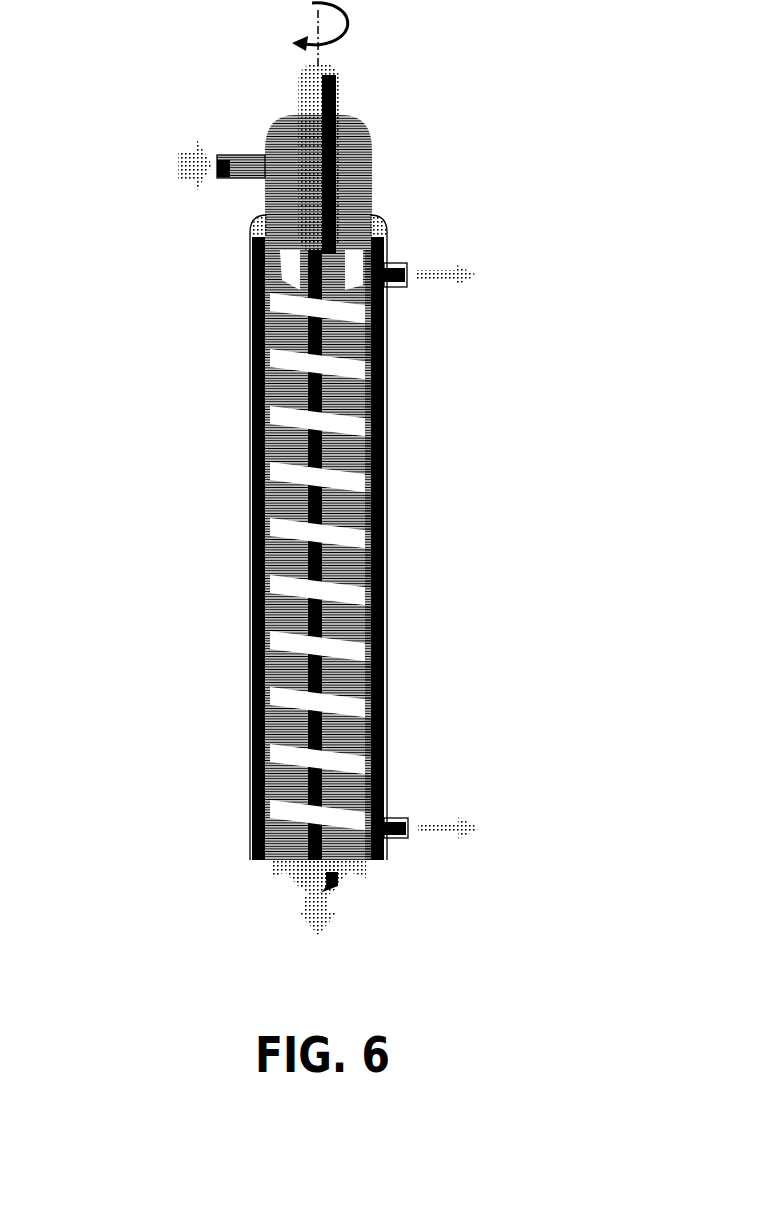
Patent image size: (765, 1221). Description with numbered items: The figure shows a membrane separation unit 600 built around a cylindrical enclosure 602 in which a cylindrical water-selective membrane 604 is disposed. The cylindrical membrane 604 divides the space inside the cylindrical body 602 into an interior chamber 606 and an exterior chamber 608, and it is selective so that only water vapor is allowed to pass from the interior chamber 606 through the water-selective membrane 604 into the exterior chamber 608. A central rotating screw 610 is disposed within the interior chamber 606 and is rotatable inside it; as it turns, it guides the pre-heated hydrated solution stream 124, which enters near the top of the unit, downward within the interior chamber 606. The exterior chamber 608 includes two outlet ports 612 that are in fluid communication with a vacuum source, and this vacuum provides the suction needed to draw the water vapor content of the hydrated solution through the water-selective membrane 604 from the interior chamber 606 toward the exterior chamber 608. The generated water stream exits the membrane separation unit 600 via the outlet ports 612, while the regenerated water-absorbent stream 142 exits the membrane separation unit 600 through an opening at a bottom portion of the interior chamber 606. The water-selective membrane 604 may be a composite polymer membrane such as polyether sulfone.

The membrane separation unit 600 is at (271, 469).
The cylindrical enclosure 602 is at (253, 462).
The cylindrical water-selective membrane 604 is at (372, 152).
The interior chamber 606 is at (362, 406).
The exterior chamber 608 is at (376, 463).
The central rotating screw 610 is at (308, 100).
The outlet ports 612 is at (395, 280).
The pre-heated hydrated solution stream 124 is at (230, 170).
The regenerated water-absorbent stream 142 is at (317, 922).